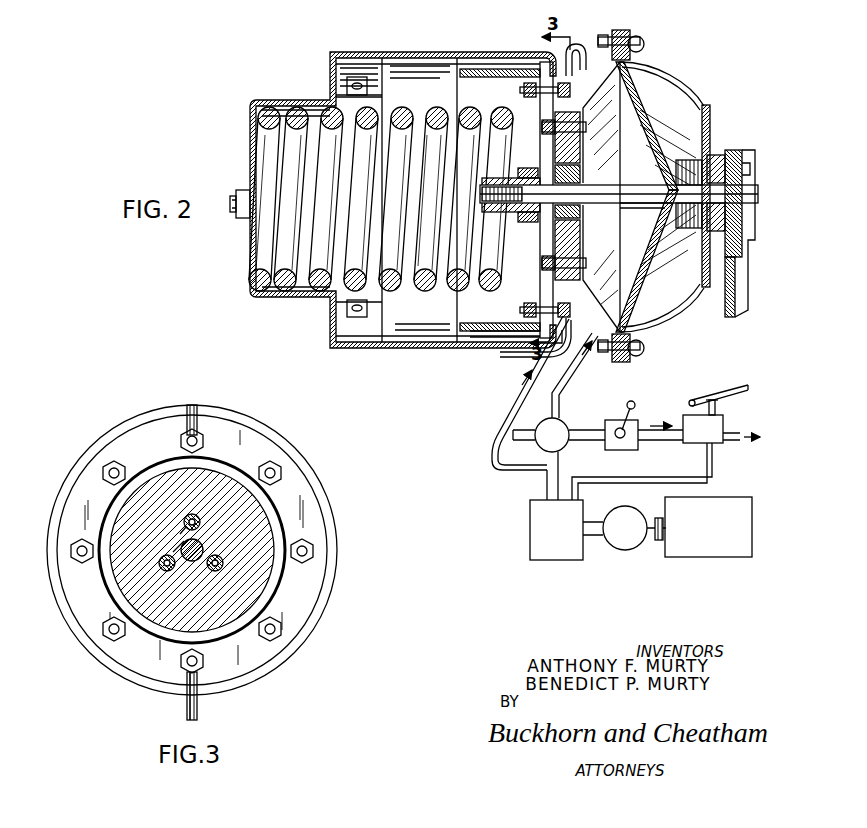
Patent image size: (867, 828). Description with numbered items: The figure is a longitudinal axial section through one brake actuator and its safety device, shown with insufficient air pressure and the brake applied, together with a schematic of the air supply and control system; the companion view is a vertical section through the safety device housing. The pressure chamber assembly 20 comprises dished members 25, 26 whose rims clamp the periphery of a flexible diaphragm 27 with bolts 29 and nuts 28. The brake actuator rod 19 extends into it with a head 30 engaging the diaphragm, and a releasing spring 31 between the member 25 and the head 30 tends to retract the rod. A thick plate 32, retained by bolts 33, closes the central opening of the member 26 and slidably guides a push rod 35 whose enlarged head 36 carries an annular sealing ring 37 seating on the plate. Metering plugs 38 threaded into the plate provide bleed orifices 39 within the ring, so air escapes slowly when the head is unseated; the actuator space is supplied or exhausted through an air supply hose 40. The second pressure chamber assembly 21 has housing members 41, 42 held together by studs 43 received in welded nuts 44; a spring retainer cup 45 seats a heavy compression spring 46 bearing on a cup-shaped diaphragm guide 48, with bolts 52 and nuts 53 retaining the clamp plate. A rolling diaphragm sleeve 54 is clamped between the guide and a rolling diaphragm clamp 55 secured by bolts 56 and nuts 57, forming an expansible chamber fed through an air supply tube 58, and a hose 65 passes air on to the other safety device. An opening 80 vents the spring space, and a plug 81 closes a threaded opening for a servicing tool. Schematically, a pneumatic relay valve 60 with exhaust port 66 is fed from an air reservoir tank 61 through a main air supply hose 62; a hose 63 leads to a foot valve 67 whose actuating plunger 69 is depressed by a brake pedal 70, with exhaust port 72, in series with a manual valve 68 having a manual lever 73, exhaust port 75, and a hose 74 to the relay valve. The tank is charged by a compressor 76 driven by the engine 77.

In FIG. 2, the brake actuator rod 19 is at (746, 168).
In FIG. 2, the pressure chamber assembly 20 is at (682, 68).
In FIG. 2, the second pressure chamber assembly 21 is at (470, 38).
In FIG. 3, the second pressure chamber assembly 21 is at (322, 480).
In FIG. 2, the dished member 25 is at (654, 80).
In FIG. 2, the dished member 26 is at (616, 78).
In FIG. 2, the flexible diaphragm 27 is at (628, 138).
In FIG. 2, the nuts 28 is at (612, 40).
In FIG. 2, the bolts 29 is at (634, 42).
In FIG. 2, the head 30 is at (680, 158).
In FIG. 2, the releasing spring 31 is at (682, 220).
In FIG. 2, the thick plate 32 is at (580, 222).
In FIG. 3, the thick plate 32 is at (120, 570).
In FIG. 2, the bolts 33 is at (586, 127).
In FIG. 2, the push rod 35 is at (604, 198).
In FIG. 3, the push rod 35 is at (200, 545).
In FIG. 2, the enlarged head 36 is at (660, 214).
In FIG. 2, the annular sealing ring 37 is at (660, 160).
In FIG. 2, the metering plugs 38 is at (580, 170).
In FIG. 3, the metering plugs 38 is at (195, 517).
In FIG. 2, the bleed orifices 39 is at (580, 172).
In FIG. 3, the bleed orifices 39 is at (180, 530).
In FIG. 2, the air supply hose 40 is at (576, 364).
In FIG. 2, the housing member 41 is at (330, 66).
In FIG. 2, the housing member 42 is at (440, 52).
In FIG. 3, the housing member 42 is at (278, 445).
In FIG. 2, the studs 43 is at (355, 90).
In FIG. 2, the nuts 44 is at (368, 90).
In FIG. 2, the spring retainer cup 45 is at (294, 100).
In FIG. 2, the heavy compression spring 46 is at (415, 286).
In FIG. 2, the diaphragm guide 48 is at (466, 98).
In FIG. 2, the bolts 52 is at (520, 78).
In FIG. 2, the nuts 53 is at (528, 92).
In FIG. 2, the rolling diaphragm sleeve 54 is at (480, 346).
In FIG. 2, the rolling diaphragm clamp 55 is at (514, 352).
In FIG. 3, the bolts 56 is at (203, 442).
In FIG. 2, the nuts 57 is at (571, 88).
In FIG. 3, the nuts 57 is at (115, 462).
In FIG. 2, the air supply tube 58 is at (508, 406).
In FIG. 3, the air supply tube 58 is at (197, 708).
In FIG. 2, the pneumatic relay valve 60 is at (564, 450).
In FIG. 2, the air reservoir tank 61 is at (535, 552).
In FIG. 2, the main air supply hose 62 is at (547, 486).
In FIG. 2, the hose 63 is at (632, 482).
In FIG. 2, the hose 65 is at (565, 50).
In FIG. 3, the hose 65 is at (196, 412).
In FIG. 2, the exhaust port 66 is at (527, 440).
In FIG. 2, the foot valve 67 is at (723, 440).
In FIG. 2, the manual valve 68 is at (638, 425).
In FIG. 2, the actuating plunger 69 is at (720, 402).
In FIG. 2, the brake pedal 70 is at (736, 388).
In FIG. 2, the exhaust port 72 is at (736, 433).
In FIG. 2, the manual lever 73 is at (635, 405).
In FIG. 2, the hose 74 is at (583, 434).
In FIG. 2, the exhaust port 75 is at (616, 440).
In FIG. 2, the compressor 76 is at (630, 550).
In FIG. 2, the engine 77 is at (715, 500).
In FIG. 2, the opening 80 is at (250, 124).
In FIG. 2, the plug 81 is at (236, 214).